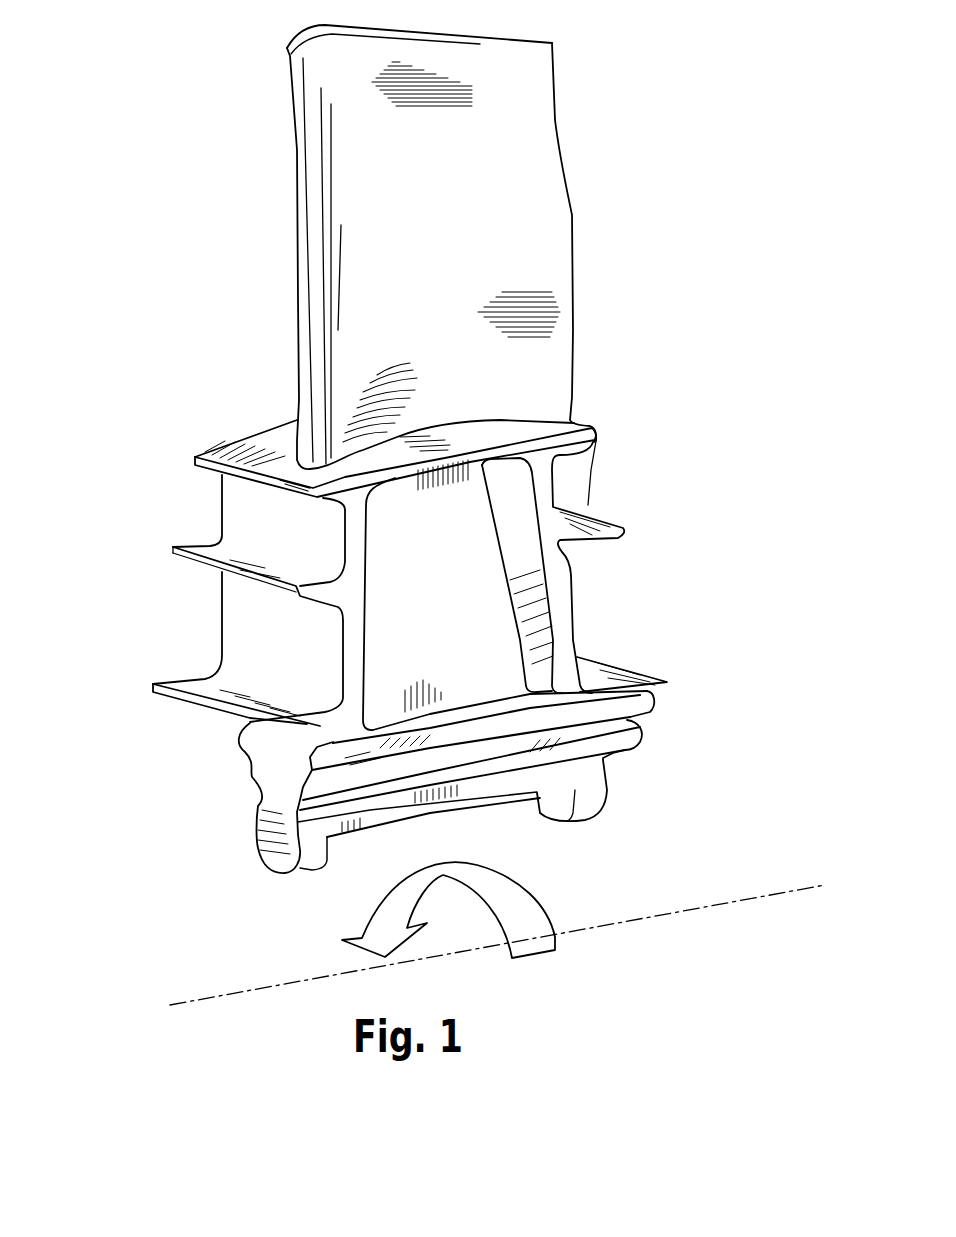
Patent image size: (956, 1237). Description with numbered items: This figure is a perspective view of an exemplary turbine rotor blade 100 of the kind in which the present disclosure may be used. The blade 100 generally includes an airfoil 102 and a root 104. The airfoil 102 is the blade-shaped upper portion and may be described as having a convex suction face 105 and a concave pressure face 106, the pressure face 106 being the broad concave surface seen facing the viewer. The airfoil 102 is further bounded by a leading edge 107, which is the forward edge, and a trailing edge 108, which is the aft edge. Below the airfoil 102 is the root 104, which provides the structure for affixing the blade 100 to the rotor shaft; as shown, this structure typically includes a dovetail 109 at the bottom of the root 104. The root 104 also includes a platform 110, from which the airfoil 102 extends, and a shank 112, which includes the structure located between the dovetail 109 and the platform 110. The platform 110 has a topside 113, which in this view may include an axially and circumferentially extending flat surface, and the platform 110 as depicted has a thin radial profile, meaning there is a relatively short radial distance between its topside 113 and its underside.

The turbine rotor blade 100 is at (688, 296).
The airfoil 102 is at (532, 128).
The root 104 is at (680, 762).
The suction face 105 is at (278, 187).
The pressure face 106 is at (475, 296).
The leading edge 107 is at (322, 330).
The trailing edge 108 is at (570, 197).
The dovetail 109 is at (266, 856).
The platform 110 is at (232, 447).
The shank 112 is at (158, 626).
The topside 113 is at (295, 466).